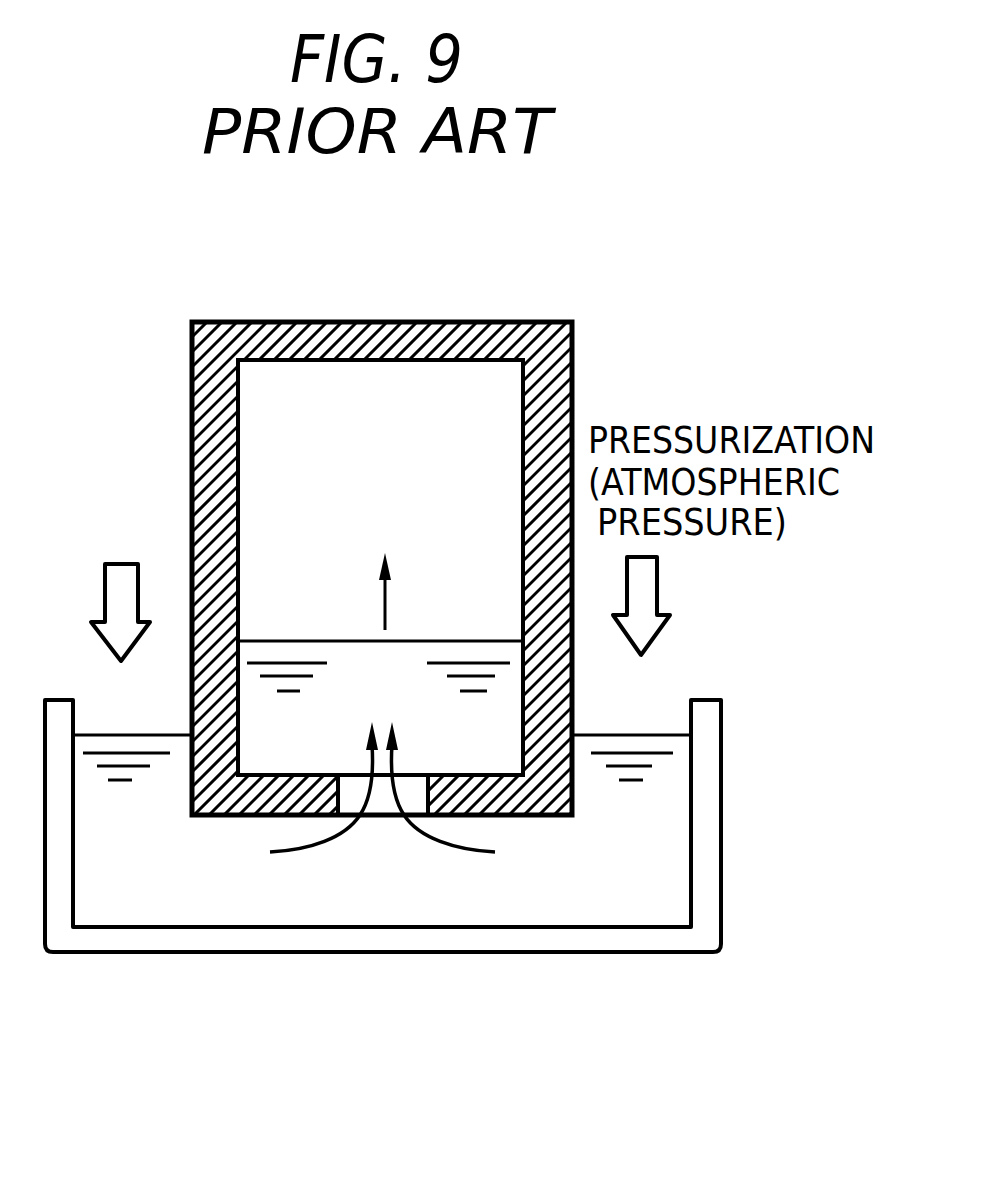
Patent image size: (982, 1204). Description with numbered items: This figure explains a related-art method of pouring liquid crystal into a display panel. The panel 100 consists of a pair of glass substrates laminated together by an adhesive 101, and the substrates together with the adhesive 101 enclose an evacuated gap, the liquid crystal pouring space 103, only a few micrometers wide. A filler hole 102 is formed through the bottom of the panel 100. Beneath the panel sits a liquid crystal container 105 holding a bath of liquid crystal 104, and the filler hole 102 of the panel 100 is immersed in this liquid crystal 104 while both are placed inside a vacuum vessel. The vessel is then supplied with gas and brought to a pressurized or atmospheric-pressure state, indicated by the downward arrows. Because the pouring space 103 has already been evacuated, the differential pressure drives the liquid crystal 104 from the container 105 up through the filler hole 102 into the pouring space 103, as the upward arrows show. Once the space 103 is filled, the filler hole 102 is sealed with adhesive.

The panel 100 is at (517, 322).
The adhesive 101 is at (570, 383).
The filler hole 102 is at (400, 820).
The liquid crystal pouring space 103 is at (305, 385).
The liquid crystal 104 is at (605, 912).
The liquid crystal container 105 is at (711, 773).